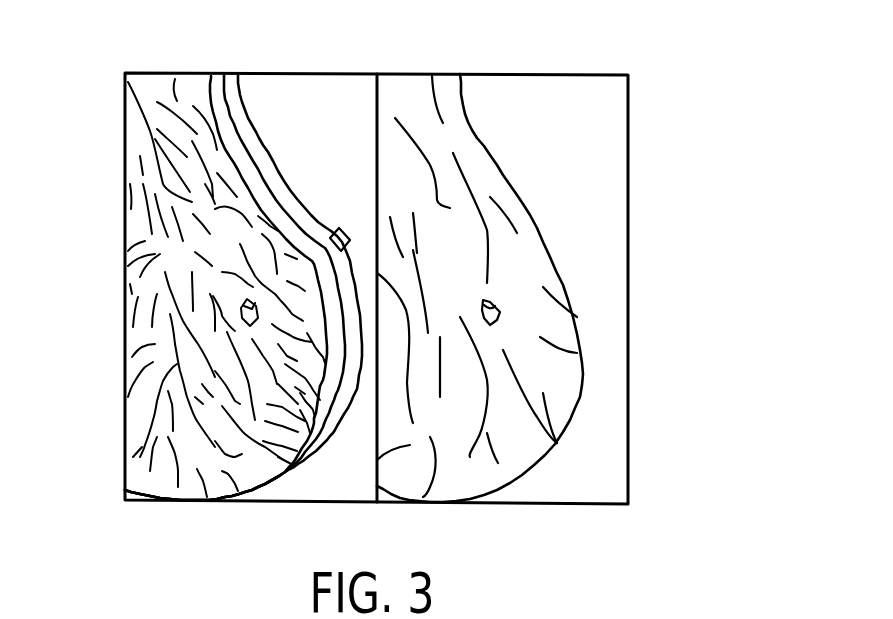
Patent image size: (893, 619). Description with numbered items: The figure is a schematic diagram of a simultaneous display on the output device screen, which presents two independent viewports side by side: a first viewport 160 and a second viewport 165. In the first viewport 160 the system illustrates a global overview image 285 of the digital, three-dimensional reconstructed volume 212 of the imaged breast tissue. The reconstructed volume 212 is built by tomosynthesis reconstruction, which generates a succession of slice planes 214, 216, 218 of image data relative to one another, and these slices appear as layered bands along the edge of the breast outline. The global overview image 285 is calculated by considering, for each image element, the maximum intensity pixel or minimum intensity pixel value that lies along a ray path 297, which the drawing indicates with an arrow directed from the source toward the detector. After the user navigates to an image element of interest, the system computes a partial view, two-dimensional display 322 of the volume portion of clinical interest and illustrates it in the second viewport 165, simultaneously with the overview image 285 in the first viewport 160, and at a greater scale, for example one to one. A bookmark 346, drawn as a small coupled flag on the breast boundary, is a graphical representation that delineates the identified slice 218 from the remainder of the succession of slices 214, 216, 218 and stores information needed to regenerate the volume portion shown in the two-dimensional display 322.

The first viewport 160 is at (160, 501).
The second viewport 165 is at (596, 504).
The three-dimensional reconstructed volume 212 is at (167, 239).
The slice plane 214 is at (238, 156).
The slice plane 216 is at (264, 166).
The identified slice 218 is at (293, 186).
The global overview image 285 is at (255, 97).
The ray path 297 is at (343, 448).
The two-dimensional display 322 is at (605, 137).
The bookmark 346 is at (347, 233).